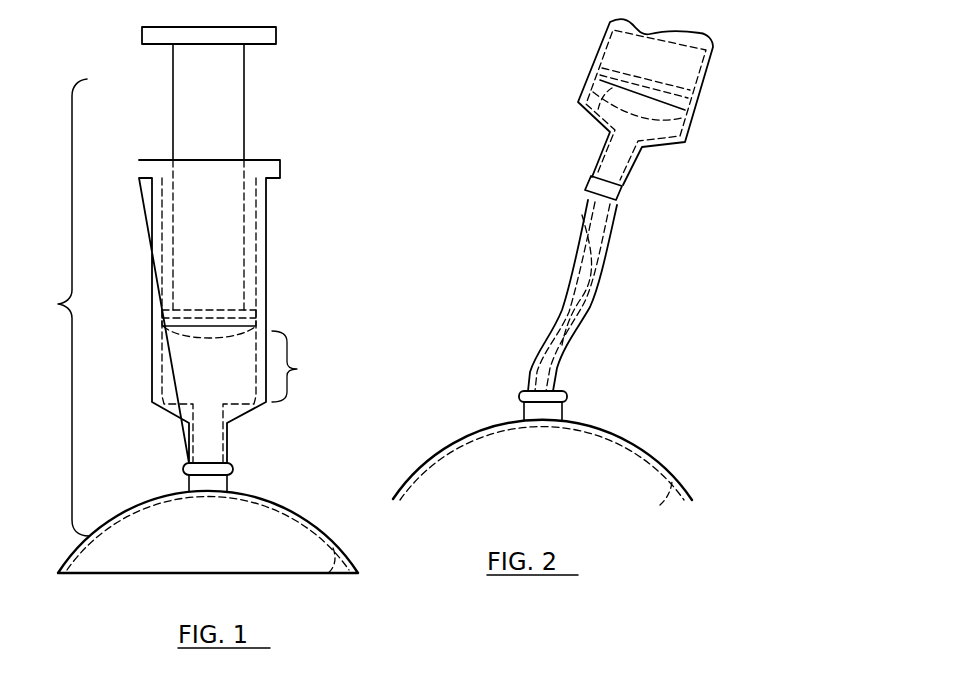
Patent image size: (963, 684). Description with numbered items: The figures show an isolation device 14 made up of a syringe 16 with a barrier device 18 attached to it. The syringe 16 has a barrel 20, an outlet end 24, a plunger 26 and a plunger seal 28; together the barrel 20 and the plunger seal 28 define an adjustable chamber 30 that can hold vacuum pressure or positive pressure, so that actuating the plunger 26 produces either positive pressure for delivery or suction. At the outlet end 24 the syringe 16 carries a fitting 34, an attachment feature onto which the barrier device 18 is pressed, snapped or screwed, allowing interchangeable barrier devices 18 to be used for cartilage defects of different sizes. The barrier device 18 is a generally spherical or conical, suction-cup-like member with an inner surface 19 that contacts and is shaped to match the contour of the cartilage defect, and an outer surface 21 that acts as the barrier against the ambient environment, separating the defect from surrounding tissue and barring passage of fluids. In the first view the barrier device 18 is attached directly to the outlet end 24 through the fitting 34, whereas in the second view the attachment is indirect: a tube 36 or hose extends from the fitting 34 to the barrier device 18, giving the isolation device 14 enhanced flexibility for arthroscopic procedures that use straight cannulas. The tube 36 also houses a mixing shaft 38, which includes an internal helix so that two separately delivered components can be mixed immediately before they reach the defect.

In FIG. 1, the isolation device 14 is at (62, 307).
In FIG. 1, the syringe 16 is at (244, 245).
In FIG. 2, the syringe 16 is at (613, 101).
In FIG. 1, the barrier device 18 is at (217, 533).
In FIG. 2, the barrier device 18 is at (552, 460).
In FIG. 1, the inner surface 19 is at (326, 576).
In FIG. 2, the inner surface 19 is at (660, 505).
In FIG. 1, the barrel 20 is at (150, 283).
In FIG. 1, the outer surface 21 is at (336, 542).
In FIG. 2, the outer surface 21 is at (672, 468).
In FIG. 1, the outlet end 24 is at (225, 450).
In FIG. 1, the plunger 26 is at (178, 73).
In FIG. 1, the plunger seal 28 is at (253, 318).
In FIG. 2, the plunger seal 28 is at (586, 106).
In FIG. 1, the adjustable chamber 30 is at (299, 366).
In FIG. 1, the fitting 34 is at (186, 463).
In FIG. 2, the fitting 34 is at (598, 190).
In FIG. 2, the tube 36 is at (574, 295).
In FIG. 2, the mixing shaft 38 is at (567, 318).